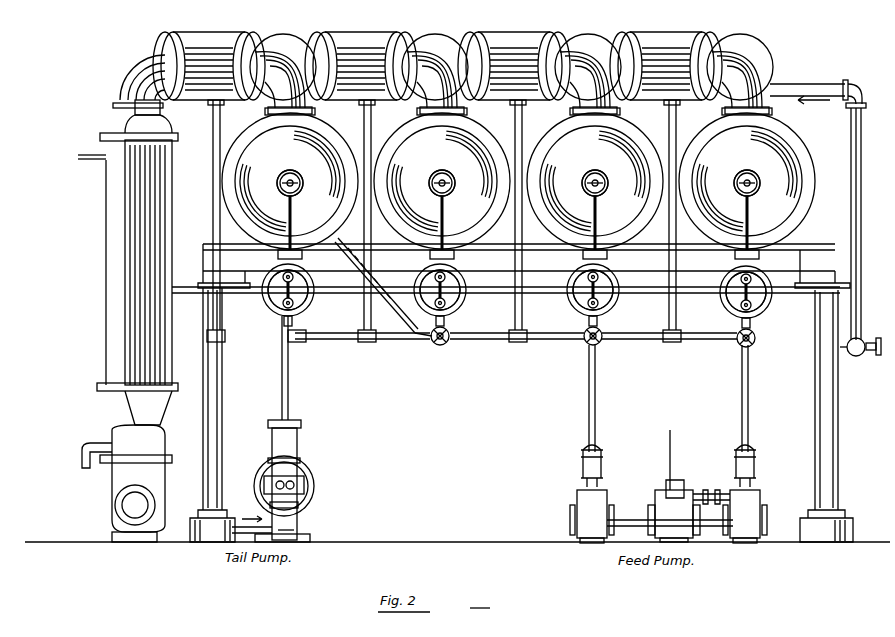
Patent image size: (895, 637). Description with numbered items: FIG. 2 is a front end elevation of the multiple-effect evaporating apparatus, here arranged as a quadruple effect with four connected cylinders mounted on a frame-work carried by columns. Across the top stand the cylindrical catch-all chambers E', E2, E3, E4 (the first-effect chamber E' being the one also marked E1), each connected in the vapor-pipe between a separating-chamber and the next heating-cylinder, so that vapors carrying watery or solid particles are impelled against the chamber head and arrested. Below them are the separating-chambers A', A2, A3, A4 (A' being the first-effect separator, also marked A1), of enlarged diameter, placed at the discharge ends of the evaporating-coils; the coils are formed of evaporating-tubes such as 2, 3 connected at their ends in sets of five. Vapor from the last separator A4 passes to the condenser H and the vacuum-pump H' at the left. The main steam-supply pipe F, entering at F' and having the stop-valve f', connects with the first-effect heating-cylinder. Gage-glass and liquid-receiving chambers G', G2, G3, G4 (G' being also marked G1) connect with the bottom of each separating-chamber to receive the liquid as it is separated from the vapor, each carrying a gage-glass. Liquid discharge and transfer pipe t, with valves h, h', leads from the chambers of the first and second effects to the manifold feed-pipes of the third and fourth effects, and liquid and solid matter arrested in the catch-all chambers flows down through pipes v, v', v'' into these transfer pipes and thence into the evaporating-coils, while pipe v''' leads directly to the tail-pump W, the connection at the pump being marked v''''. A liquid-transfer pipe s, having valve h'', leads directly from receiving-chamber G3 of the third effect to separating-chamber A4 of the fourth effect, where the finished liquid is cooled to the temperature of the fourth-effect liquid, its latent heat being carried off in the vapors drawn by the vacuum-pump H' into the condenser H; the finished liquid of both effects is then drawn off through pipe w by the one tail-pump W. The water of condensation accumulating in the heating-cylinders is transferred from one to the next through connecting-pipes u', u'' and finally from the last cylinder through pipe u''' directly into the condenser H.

The catch-all chamber E4 is at (234, 66).
The catch-all chamber E3 is at (386, 66).
The catch-all chamber E2 is at (539, 66).
The catch-all chamber E1 is at (691, 66).
The catch-all chamber E' is at (691, 66).
The steam inlet pipe F' is at (818, 88).
The main steam-supply pipe F is at (863, 224).
The stop-valve f' is at (860, 356).
The separating-chamber A4 is at (290, 183).
The separating-chamber A3 is at (442, 183).
The separating-chamber A2 is at (595, 183).
The separating-chamber A1 is at (747, 183).
The separating-chamber A' is at (747, 183).
The pipe v''' is at (224, 221).
The pipe v'' is at (374, 221).
The pipe v' is at (523, 221).
The pipe v is at (676, 221).
The condenser H is at (128, 240).
The vacuum-pump H' is at (127, 483).
The connecting-pipe u''' is at (216, 296).
The connecting-pipe u'' is at (390, 296).
The connecting-pipe u' is at (680, 296).
The liquid-transfer pipe s is at (376, 285).
The evaporating-tube 3 is at (366, 263).
The evaporating-tube 2 is at (417, 344).
The gage-glass and liquid-receiving chamber G4 is at (293, 295).
The gage-glass and liquid-receiving chamber G3 is at (448, 295).
The gage-glass and liquid-receiving chamber G2 is at (602, 295).
The gage-glass and liquid-receiving chamber G1 is at (756, 297).
The gage-glass and liquid-receiving chamber G' is at (756, 297).
The liquid discharge and transfer pipe t is at (669, 345).
The valve h'' is at (448, 342).
The valve h' is at (600, 342).
The valve h is at (751, 343).
The pipe w is at (294, 368).
The tail-pump W is at (285, 481).
The discharge pipe v'''' is at (252, 518).